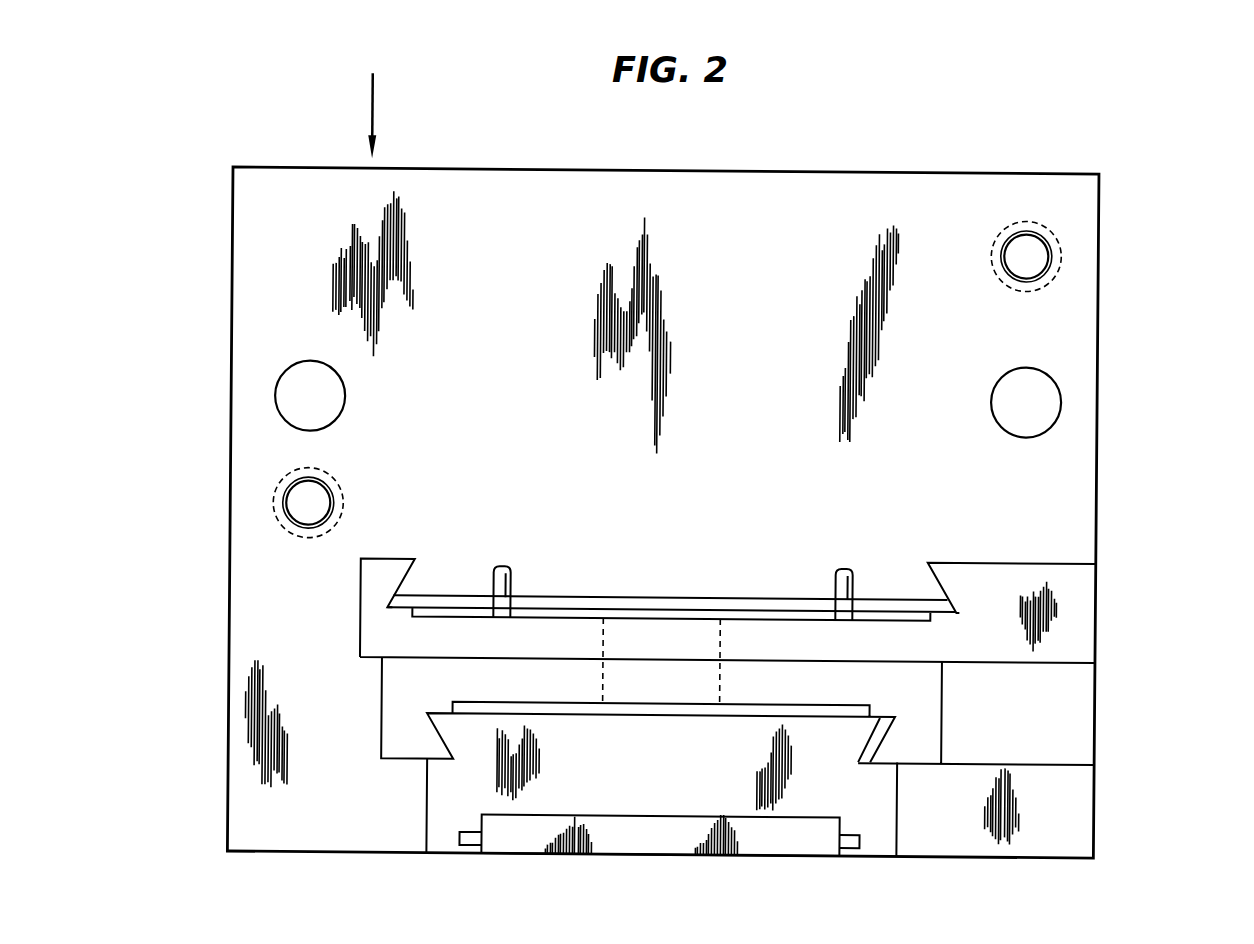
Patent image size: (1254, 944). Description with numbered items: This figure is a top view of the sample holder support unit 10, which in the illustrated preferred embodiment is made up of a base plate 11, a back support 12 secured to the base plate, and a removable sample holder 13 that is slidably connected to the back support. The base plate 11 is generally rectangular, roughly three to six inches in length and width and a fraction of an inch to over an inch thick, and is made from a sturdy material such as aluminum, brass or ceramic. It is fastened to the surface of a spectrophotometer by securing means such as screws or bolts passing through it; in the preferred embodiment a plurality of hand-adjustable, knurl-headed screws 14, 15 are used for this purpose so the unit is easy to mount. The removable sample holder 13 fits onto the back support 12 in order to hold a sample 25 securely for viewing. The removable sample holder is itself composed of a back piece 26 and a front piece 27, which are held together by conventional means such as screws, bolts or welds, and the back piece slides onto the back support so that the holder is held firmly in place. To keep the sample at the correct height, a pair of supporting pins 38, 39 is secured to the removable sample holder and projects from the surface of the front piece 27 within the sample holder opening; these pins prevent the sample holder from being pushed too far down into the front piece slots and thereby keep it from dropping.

The sample holder support unit 10 is at (375, 97).
The base plate 11 is at (262, 822).
The back support 12 is at (445, 806).
The removable sample holder 13 is at (1112, 702).
The knurl-headed screw 14 is at (1055, 251).
The knurl-headed screw 15 is at (278, 505).
The sample 25 is at (654, 594).
The back piece 26 is at (399, 681).
The front piece 27 is at (380, 620).
The supporting pin 38 is at (848, 563).
The supporting pin 39 is at (505, 563).